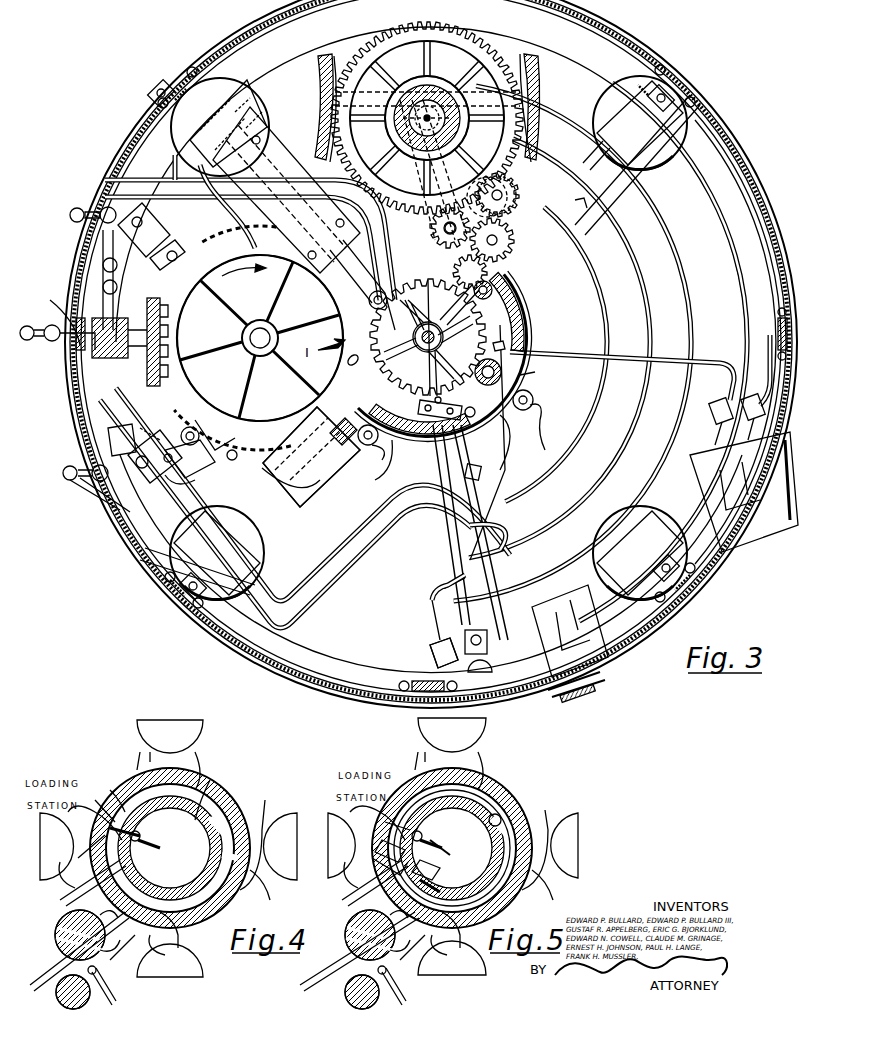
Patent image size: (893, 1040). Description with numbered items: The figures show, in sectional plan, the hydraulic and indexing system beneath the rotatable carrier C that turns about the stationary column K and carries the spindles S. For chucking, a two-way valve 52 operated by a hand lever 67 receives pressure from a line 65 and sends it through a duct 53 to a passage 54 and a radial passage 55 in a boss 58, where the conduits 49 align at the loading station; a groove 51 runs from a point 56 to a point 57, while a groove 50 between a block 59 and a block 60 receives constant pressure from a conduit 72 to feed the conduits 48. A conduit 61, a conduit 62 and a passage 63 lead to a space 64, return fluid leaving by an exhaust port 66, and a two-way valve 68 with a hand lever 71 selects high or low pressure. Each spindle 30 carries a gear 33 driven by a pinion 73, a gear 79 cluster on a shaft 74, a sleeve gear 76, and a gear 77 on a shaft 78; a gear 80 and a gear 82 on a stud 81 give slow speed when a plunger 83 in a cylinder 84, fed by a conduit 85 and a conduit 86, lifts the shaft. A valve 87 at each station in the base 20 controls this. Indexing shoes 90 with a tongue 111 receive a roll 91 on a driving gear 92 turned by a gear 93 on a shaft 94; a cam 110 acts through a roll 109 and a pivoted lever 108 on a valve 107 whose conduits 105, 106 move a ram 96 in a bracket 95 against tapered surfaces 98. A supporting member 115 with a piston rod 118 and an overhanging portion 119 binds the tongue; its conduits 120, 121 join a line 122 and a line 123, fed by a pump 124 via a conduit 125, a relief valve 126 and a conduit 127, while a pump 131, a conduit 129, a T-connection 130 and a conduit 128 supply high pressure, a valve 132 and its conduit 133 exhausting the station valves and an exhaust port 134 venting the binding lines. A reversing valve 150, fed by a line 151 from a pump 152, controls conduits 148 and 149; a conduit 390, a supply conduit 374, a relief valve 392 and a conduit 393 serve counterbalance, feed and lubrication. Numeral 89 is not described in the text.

In FIG. 3, the base 20 is at (198, 622).
In FIG. 3, the line 151 is at (385, 28).
In FIG. 3, the gear 33 is at (498, 62).
In FIG. 3, the spindle 30 is at (469, 130).
In FIG. 3, the tongue 111 is at (240, 82).
In FIG. 3, the piston rod 118 is at (246, 96).
In FIG. 3, the overhanging portion 119 is at (255, 110).
In FIG. 3, the supporting member 115 is at (210, 88).
In FIG. 3, the valve 87 is at (660, 104).
In FIG. 3, the conduit 120 is at (598, 172).
In FIG. 3, the conduit 121 is at (600, 158).
In FIG. 3, the tapered surfaces 98 is at (181, 316).
In FIG. 3, the indexing shoes 90 is at (278, 157).
In FIG. 3, the roll 91 is at (330, 346).
In FIG. 3, the driving gear 92 is at (346, 362).
In FIG. 3, the conduit 72 is at (498, 342).
In FIG. 5, the conduit 72 is at (492, 828).
In FIG. 3, the gear 93 is at (378, 385).
In FIG. 3, the shaft 94 is at (444, 340).
In FIG. 3, the gear 77 is at (456, 290).
In FIG. 3, the shaft 78 is at (527, 277).
In FIG. 3, the conduit 390 is at (447, 338).
In FIG. 3, the supply conduit 374 is at (454, 386).
In FIG. 3, the conduit 393 is at (424, 622).
In FIG. 3, the relief valve 392 is at (432, 653).
In FIG. 3, the stud 81 is at (515, 182).
In FIG. 3, the gear 82 is at (532, 194).
In FIG. 3, the gear 80 is at (522, 208).
In FIG. 3, the gear 79 is at (518, 228).
In FIG. 3, the pinion 73 is at (446, 215).
In FIG. 3, the sleeve gear 76 is at (513, 258).
In FIG. 3, the shaft 74 is at (448, 236).
In FIG. 3, the plunger 83 is at (525, 380).
In FIG. 3, the cylinder 84 is at (528, 394).
In FIG. 3, the conduit 85 is at (556, 414).
In FIG. 3, the conduit 86 is at (532, 432).
In FIG. 3, the pin 89 is at (481, 424).
In FIG. 3, the T-connection 130 is at (472, 440).
In FIG. 3, the conduit 129 is at (481, 480).
In FIG. 3, the conduit 128 is at (448, 476).
In FIG. 3, the conduit 127 is at (445, 590).
In FIG. 3, the pump 124 is at (540, 618).
In FIG. 3, the relief valve 126 is at (478, 628).
In FIG. 3, the conduit 125 is at (490, 674).
In FIG. 3, the pump 131 is at (590, 688).
In FIG. 3, the pump 152 is at (752, 470).
In FIG. 3, the line 122 is at (312, 518).
In FIG. 3, the line 123 is at (308, 546).
In FIG. 3, the conduit 133 is at (172, 226).
In FIG. 3, the bracket 95 is at (105, 318).
In FIG. 3, the ram 96 is at (145, 362).
In FIG. 3, the valve 132 is at (122, 238).
In FIG. 3, the two-way valve 52 is at (78, 206).
In FIG. 4, the two-way valve 52 is at (56, 928).
In FIG. 5, the two-way valve 52 is at (348, 928).
In FIG. 3, the hand lever 67 is at (70, 217).
In FIG. 3, the reversing valve 150 is at (60, 312).
In FIG. 3, the conduit 148 is at (48, 342).
In FIG. 3, the conduit 149 is at (70, 362).
In FIG. 3, the conduit 105 is at (120, 400).
In FIG. 3, the conduit 106 is at (132, 412).
In FIG. 3, the valve 107 is at (148, 476).
In FIG. 3, the exhaust port 134 is at (190, 476).
In FIG. 3, the pivoted lever 108 is at (197, 400).
In FIG. 3, the roll 109 is at (225, 418).
In FIG. 3, the cam 110 is at (240, 450).
In FIG. 3, the hand lever 71 is at (66, 480).
In FIG. 4, the hand lever 71 is at (103, 985).
In FIG. 5, the hand lever 71 is at (394, 985).
In FIG. 3, the two-way valve 68 is at (90, 482).
In FIG. 4, the two-way valve 68 is at (58, 992).
In FIG. 5, the two-way valve 68 is at (346, 994).
In FIG. 4, the carrier C is at (238, 790).
In FIG. 5, the carrier C is at (520, 790).
In FIG. 4, the column K is at (210, 817).
In FIG. 5, the column K is at (492, 817).
In FIG. 4, the spindles S is at (170, 735).
In FIG. 5, the spindles S is at (430, 730).
In FIG. 4, the conduits 48 is at (136, 752).
In FIG. 5, the conduits 48 is at (416, 754).
In FIG. 4, the conduits 49 is at (200, 752).
In FIG. 5, the conduits 49 is at (484, 754).
In FIG. 4, the groove 51 is at (215, 792).
In FIG. 4, the point 56 is at (116, 778).
In FIG. 4, the boss 58 is at (108, 800).
In FIG. 4, the point 57 is at (88, 854).
In FIG. 4, the radial passage 55 is at (142, 826).
In FIG. 4, the passage 54 is at (142, 838).
In FIG. 5, the passage 54 is at (424, 834).
In FIG. 4, the duct 53 is at (60, 905).
In FIG. 5, the duct 53 is at (344, 907).
In FIG. 4, the exhaust port 66 is at (111, 931).
In FIG. 5, the exhaust port 66 is at (400, 931).
In FIG. 4, the line 65 is at (48, 960).
In FIG. 5, the line 65 is at (326, 968).
In FIG. 4, the conduit 61 is at (122, 953).
In FIG. 5, the conduit 61 is at (411, 953).
In FIG. 5, the groove 50 is at (485, 795).
In FIG. 5, the block 59 is at (384, 824).
In FIG. 5, the passage 63 is at (380, 847).
In FIG. 5, the space 64 is at (382, 866).
In FIG. 5, the conduit 62 is at (432, 866).
In FIG. 5, the block 60 is at (432, 884).